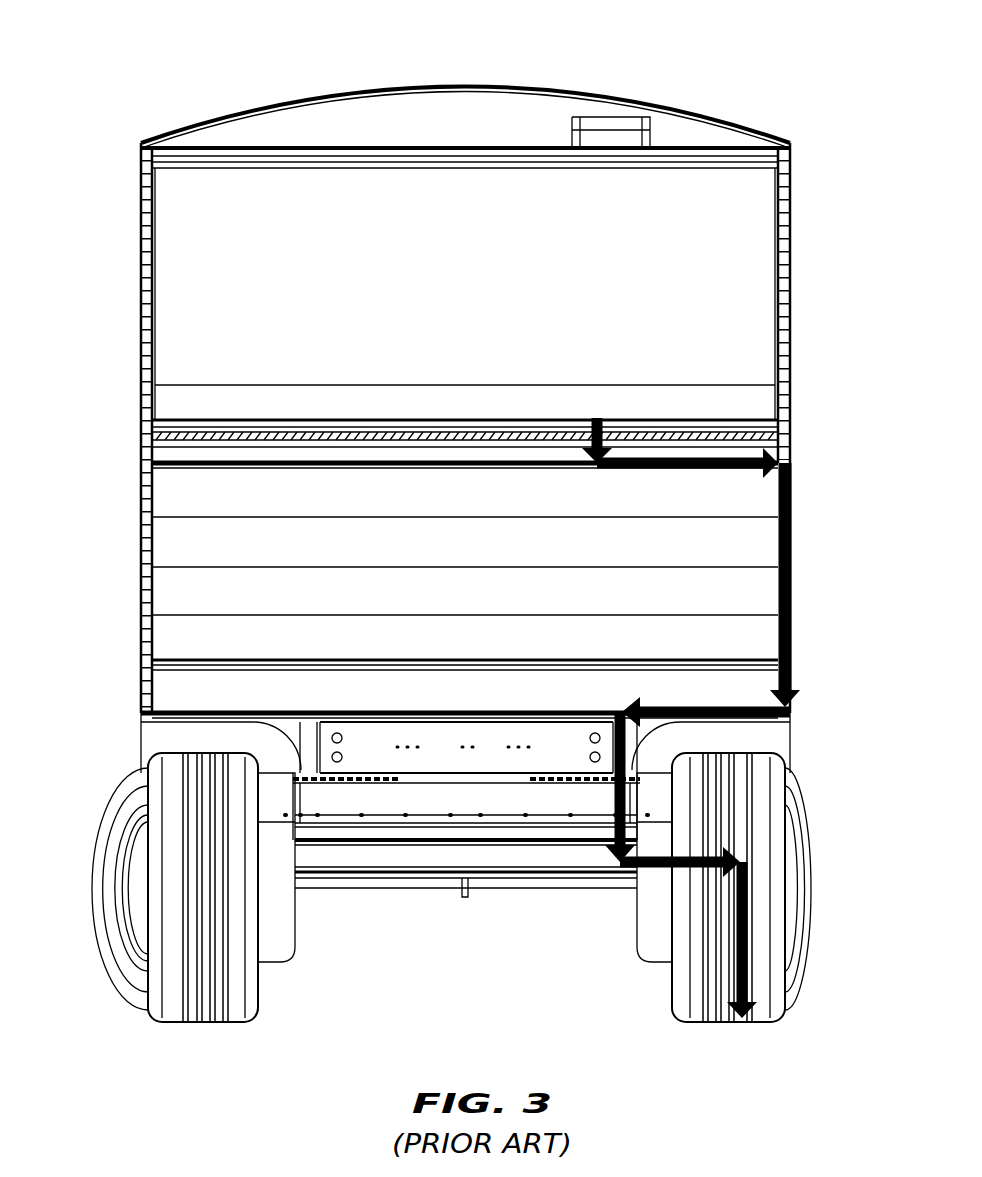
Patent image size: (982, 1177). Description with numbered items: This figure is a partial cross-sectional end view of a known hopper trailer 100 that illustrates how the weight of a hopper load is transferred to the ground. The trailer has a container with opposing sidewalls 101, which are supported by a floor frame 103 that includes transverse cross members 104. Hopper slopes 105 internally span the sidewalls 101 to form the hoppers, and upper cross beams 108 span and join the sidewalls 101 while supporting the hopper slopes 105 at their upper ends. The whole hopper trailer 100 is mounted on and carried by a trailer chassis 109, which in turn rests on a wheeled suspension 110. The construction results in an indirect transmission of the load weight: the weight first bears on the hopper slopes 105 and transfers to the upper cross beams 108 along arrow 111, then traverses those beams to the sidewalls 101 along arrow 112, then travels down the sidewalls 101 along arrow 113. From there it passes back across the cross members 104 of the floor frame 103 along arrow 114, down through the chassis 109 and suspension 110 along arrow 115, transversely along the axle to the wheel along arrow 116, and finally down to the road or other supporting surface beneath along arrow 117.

The hopper trailer 100 is at (228, 88).
The sidewalls 101 is at (140, 212).
The floor frame 103 is at (133, 681).
The cross members 104 is at (185, 690).
The hopper slopes 105 is at (175, 490).
The upper cross beams 108 is at (175, 440).
The trailer chassis 109 is at (433, 738).
The wheeled suspension 110 is at (92, 762).
The arrow 111 is at (600, 418).
The arrow 112 is at (685, 460).
The arrow 113 is at (793, 556).
The arrow 114 is at (703, 714).
The arrow 115 is at (633, 798).
The arrow 116 is at (670, 965).
The arrow 117 is at (750, 925).